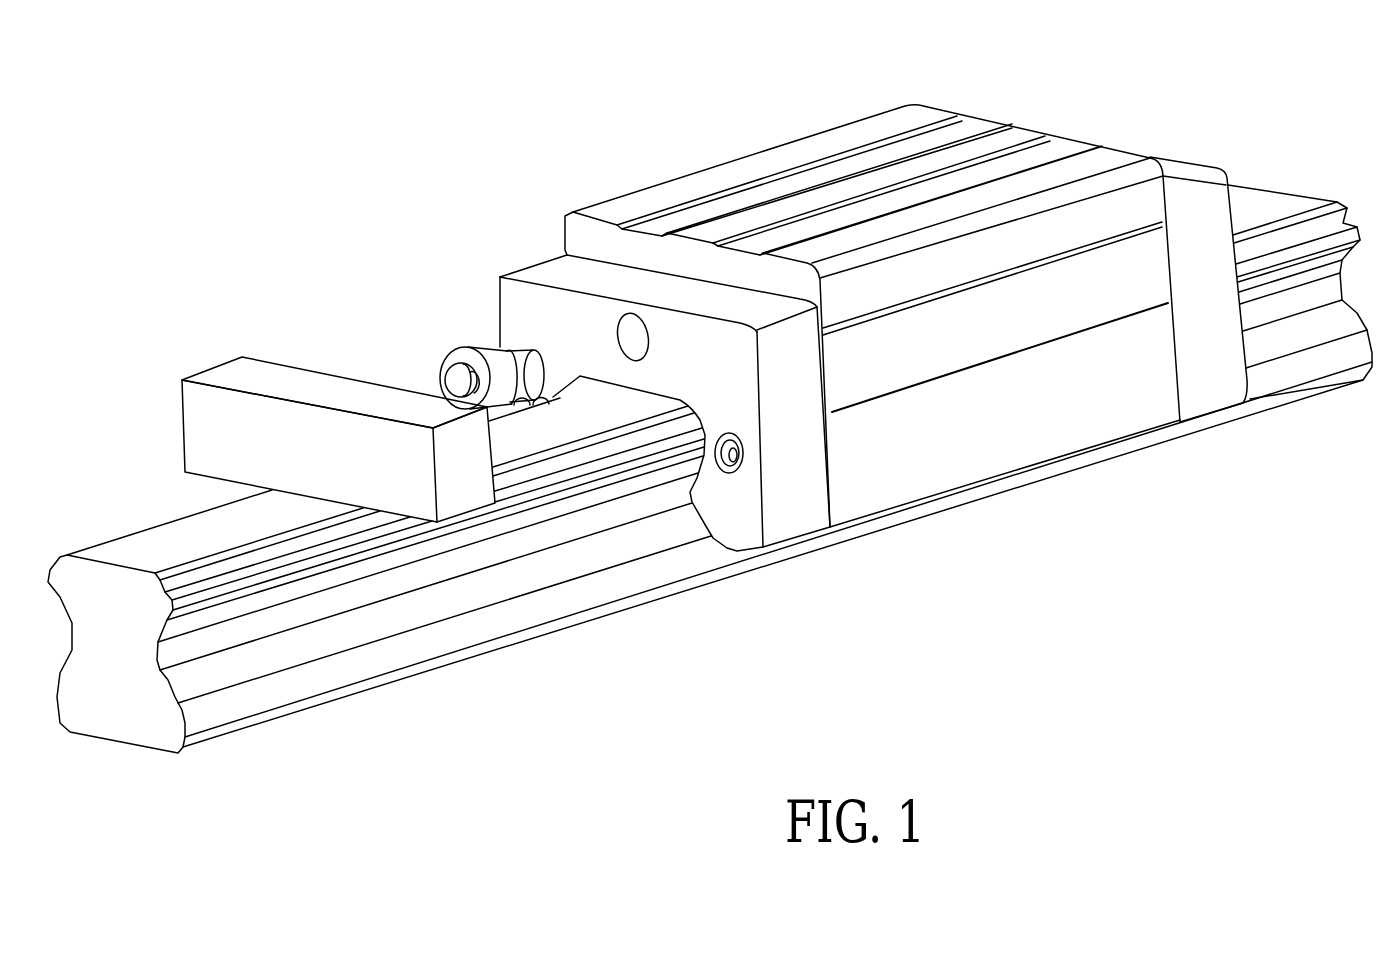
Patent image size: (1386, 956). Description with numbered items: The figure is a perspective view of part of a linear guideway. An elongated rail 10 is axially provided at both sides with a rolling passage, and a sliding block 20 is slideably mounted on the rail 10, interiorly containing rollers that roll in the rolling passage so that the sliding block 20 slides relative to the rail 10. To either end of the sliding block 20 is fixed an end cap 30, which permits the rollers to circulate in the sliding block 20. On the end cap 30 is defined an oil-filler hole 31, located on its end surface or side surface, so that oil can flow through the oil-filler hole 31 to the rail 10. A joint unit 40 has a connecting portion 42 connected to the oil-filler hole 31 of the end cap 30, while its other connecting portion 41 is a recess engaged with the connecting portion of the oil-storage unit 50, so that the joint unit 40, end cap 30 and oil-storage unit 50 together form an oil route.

The rail 10 is at (1272, 206).
The sliding block 20 is at (775, 188).
The end cap 30 is at (800, 487).
The oil-filler hole 31 is at (622, 337).
The joint unit 40 is at (443, 380).
The connecting portion 41 is at (436, 377).
The connecting portion 42 is at (517, 352).
The oil-storage unit 50 is at (473, 473).